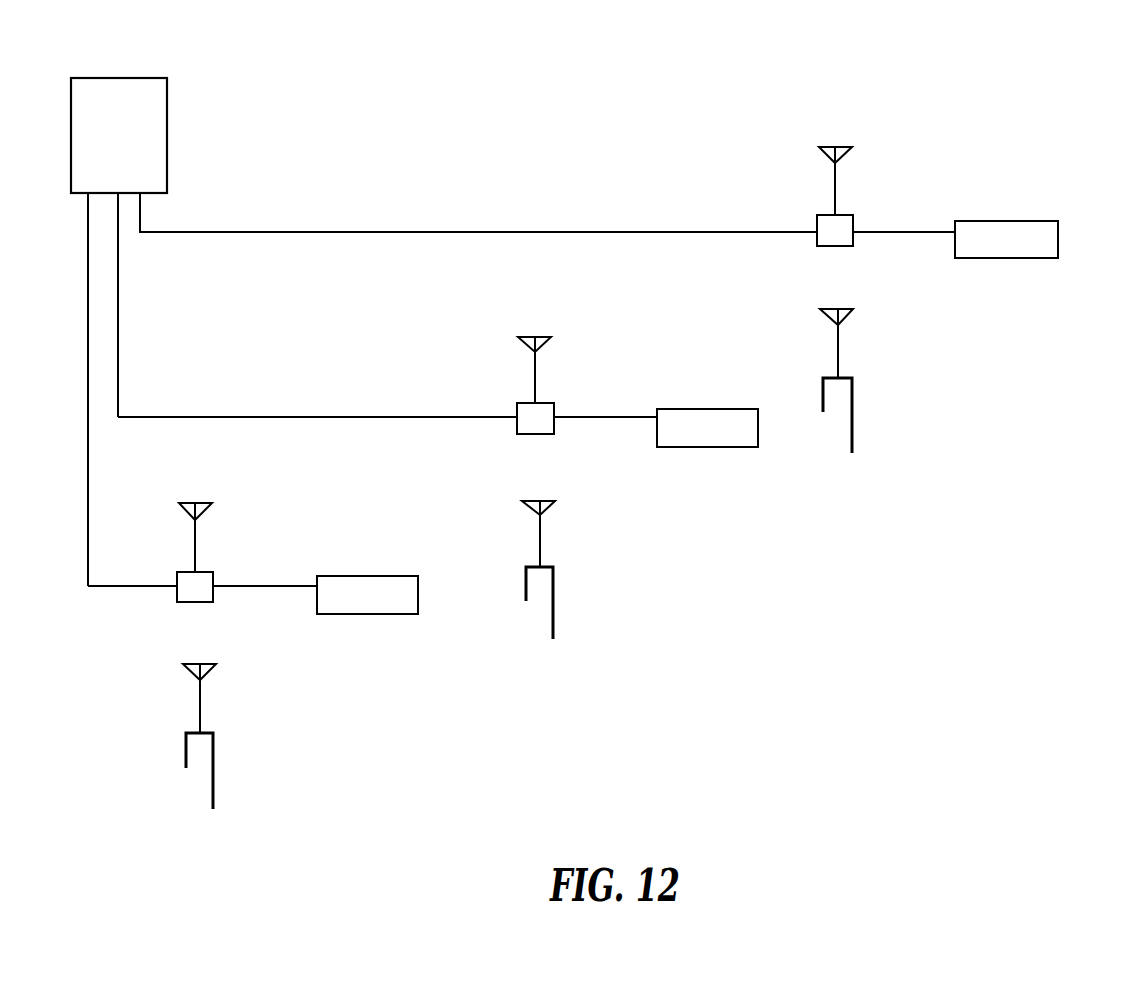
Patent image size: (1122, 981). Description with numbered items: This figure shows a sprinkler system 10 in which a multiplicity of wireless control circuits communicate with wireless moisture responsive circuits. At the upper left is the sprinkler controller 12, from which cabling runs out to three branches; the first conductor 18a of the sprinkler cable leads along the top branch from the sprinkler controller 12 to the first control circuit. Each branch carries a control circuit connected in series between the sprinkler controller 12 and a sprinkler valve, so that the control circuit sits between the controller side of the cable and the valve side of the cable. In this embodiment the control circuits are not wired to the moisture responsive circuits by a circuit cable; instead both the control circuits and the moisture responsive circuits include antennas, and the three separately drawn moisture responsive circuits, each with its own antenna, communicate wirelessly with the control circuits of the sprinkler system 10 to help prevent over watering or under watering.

The sprinkler system 10 is at (591, 143).
The sprinkler controller 12 is at (148, 142).
The first conductor 18a is at (212, 230).